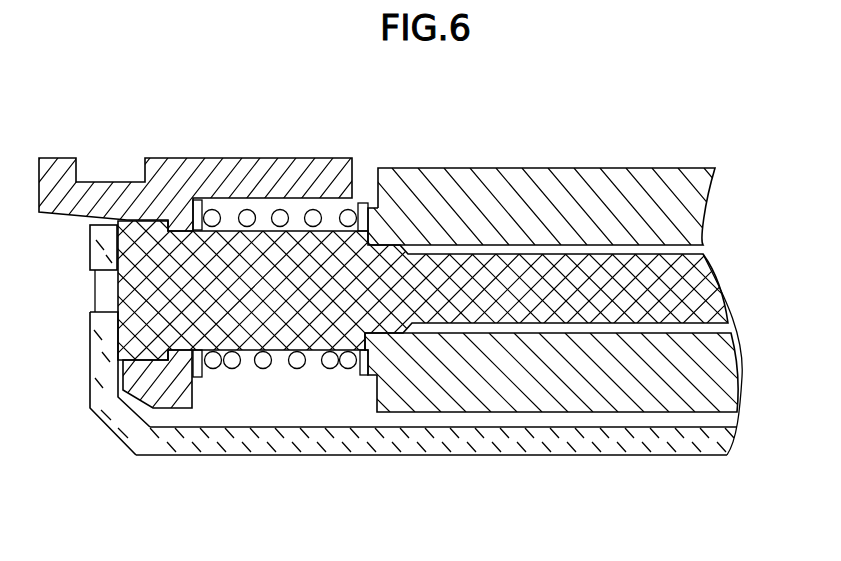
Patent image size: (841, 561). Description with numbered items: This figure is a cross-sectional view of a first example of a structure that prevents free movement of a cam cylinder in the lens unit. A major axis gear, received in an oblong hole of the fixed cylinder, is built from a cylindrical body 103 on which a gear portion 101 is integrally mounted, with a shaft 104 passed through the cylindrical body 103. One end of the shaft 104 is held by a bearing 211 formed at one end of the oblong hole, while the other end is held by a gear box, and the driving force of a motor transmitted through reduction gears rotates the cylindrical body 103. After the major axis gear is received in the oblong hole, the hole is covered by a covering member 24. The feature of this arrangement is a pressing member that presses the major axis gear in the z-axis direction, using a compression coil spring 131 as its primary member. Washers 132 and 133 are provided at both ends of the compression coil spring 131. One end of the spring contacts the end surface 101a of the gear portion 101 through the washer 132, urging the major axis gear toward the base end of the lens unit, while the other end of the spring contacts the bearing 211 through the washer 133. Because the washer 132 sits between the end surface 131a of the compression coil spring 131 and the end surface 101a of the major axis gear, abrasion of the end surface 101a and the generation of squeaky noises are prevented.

The covering member 24 is at (593, 440).
The gear portion 101 is at (555, 200).
The end surface 101a is at (374, 218).
The cylindrical body 103 is at (672, 182).
The shaft 104 is at (698, 283).
The compression coil spring 131 is at (266, 366).
The end surface 131a is at (358, 370).
The washer 132 is at (363, 203).
The washer 133 is at (200, 376).
The bearing 211 is at (123, 435).